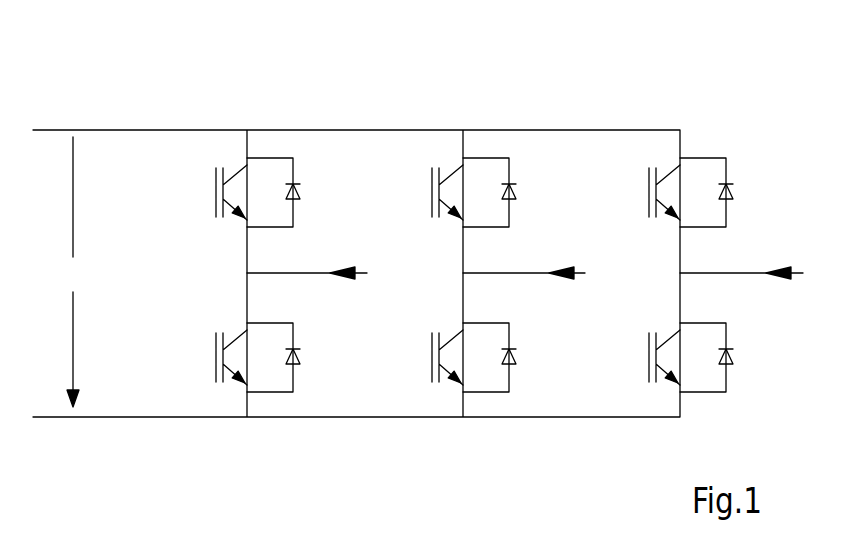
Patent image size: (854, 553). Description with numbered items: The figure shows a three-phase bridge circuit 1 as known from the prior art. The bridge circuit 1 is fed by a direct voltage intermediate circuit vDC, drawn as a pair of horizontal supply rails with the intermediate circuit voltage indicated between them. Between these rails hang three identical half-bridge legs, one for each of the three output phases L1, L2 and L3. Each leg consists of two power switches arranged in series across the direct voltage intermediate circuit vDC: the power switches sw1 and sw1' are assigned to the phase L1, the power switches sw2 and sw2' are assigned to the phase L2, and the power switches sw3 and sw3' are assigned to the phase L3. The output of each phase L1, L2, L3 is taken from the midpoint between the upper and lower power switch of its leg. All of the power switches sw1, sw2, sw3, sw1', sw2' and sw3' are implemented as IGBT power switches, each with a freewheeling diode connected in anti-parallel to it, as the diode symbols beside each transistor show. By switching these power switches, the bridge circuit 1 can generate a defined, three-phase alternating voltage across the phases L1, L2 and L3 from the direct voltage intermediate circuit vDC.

The bridge circuit 1 is at (323, 83).
The direct voltage intermediate circuit vDC is at (74, 272).
The phase L1 is at (323, 275).
The phase L2 is at (541, 275).
The phase L3 is at (758, 275).
The power switch sw1 is at (222, 192).
The power switch sw1' is at (218, 357).
The power switch sw2 is at (436, 192).
The power switch sw2' is at (433, 357).
The power switch sw3 is at (654, 192).
The power switch sw3' is at (650, 357).